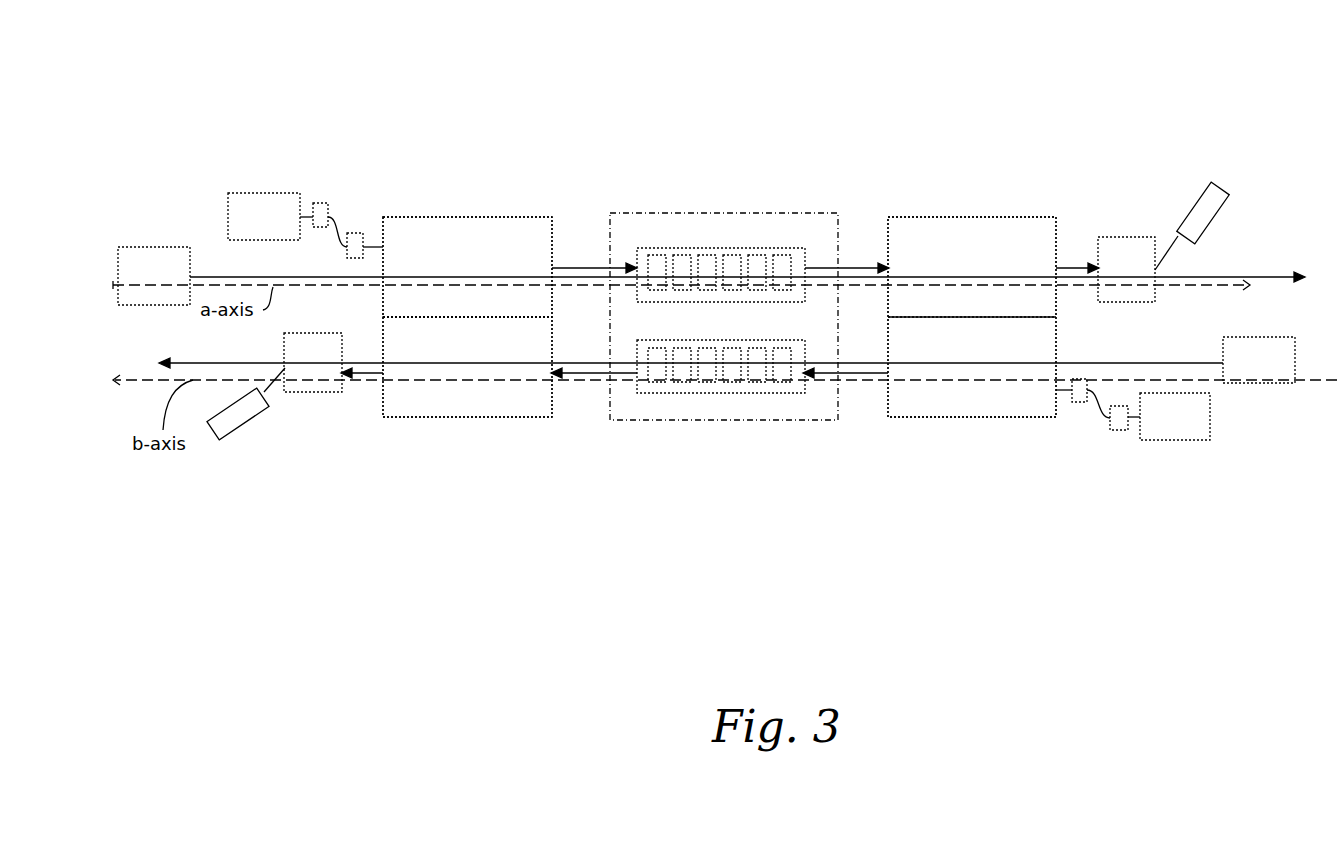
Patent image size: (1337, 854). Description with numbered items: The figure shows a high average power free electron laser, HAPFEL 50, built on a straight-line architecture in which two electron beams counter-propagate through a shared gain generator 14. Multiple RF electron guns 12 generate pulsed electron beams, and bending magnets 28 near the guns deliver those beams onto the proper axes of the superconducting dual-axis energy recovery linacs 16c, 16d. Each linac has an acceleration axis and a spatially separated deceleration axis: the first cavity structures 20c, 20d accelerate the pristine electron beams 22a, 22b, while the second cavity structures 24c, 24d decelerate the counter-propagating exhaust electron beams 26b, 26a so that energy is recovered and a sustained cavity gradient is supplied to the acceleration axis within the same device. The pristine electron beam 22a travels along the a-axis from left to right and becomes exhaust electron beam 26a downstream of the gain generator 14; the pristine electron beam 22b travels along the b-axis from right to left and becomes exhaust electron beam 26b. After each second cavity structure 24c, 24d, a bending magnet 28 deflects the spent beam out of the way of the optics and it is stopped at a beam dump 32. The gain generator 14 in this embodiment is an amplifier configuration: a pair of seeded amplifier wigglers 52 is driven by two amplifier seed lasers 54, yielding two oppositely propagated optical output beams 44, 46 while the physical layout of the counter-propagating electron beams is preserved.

The HAPFEL 50 is at (232, 106).
The RF electron gun 12 is at (719, 316).
The gain generator 14 is at (714, 313).
The superconducting dual-axis energy recovery linac 16c is at (467, 261).
The superconducting dual-axis energy recovery linac 16d is at (972, 261).
The first cavity structure 20c is at (467, 267).
The first cavity structure 20d is at (972, 367).
The second cavity structure 24c is at (467, 367).
The second cavity structure 24d is at (972, 267).
The pristine electron beam 22a is at (590, 265).
The pristine electron beam 22b is at (863, 375).
The exhaust electron beam 26a is at (855, 268).
The exhaust electron beam 26b is at (583, 375).
The bending magnet 28 is at (355, 233).
The beam dump 32 is at (1198, 204).
The optical output beam 44 is at (215, 362).
The optical output beam 46 is at (1265, 277).
The seeded amplifier wiggler 52 is at (720, 248).
The amplifier seed laser 54 is at (706, 315).